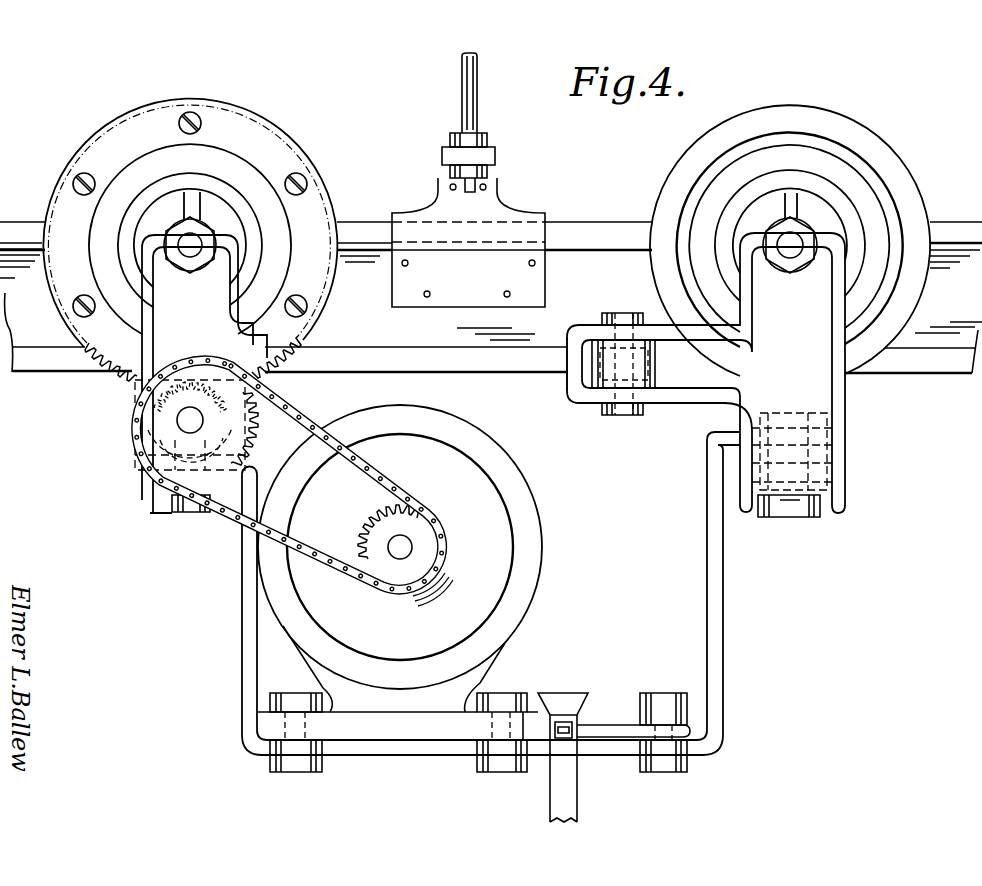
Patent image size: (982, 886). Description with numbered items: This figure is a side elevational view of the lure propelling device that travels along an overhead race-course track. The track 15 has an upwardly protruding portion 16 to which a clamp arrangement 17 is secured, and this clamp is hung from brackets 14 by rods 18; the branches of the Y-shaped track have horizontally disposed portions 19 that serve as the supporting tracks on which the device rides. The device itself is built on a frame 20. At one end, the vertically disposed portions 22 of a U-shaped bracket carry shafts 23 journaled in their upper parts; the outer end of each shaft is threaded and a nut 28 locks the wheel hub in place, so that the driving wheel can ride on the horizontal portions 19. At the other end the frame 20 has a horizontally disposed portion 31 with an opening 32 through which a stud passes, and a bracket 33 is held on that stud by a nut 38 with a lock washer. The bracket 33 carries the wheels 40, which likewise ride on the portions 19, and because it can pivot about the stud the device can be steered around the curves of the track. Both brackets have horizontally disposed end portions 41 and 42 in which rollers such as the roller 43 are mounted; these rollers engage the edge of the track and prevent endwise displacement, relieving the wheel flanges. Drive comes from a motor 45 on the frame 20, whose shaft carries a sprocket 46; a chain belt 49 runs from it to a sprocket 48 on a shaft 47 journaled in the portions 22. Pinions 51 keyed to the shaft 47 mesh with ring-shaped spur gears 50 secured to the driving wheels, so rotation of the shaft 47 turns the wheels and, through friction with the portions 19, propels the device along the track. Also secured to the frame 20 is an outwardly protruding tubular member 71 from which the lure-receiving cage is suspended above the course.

The bracket 14 is at (477, 117).
The track 15 is at (584, 257).
The upwardly protruding portion 16 is at (570, 230).
The clamp arrangement 17 is at (520, 224).
The rod 18 is at (485, 127).
The horizontally disposed portions 19 is at (467, 362).
The frame 20 is at (723, 596).
The vertically disposed portions 22 is at (145, 272).
The shaft 23 is at (795, 242).
The nut 28 is at (783, 263).
The horizontally disposed portion 31 is at (730, 433).
The opening 32 is at (835, 443).
The bracket 33 is at (835, 405).
The nut 38 is at (785, 510).
The wheels 40 is at (898, 170).
The horizontally disposed end portion 41 is at (581, 400).
The horizontally disposed end portion 42 is at (263, 372).
The roller 43 is at (655, 365).
The motor 45 is at (543, 538).
The sprocket 46 is at (416, 536).
The shaft 47 is at (185, 422).
The sprocket 48 is at (200, 500).
The chain belt 49 is at (263, 530).
The ring-shaped spur gear 50 is at (288, 165).
The pinion 51 is at (140, 458).
The tubular member 71 is at (577, 808).